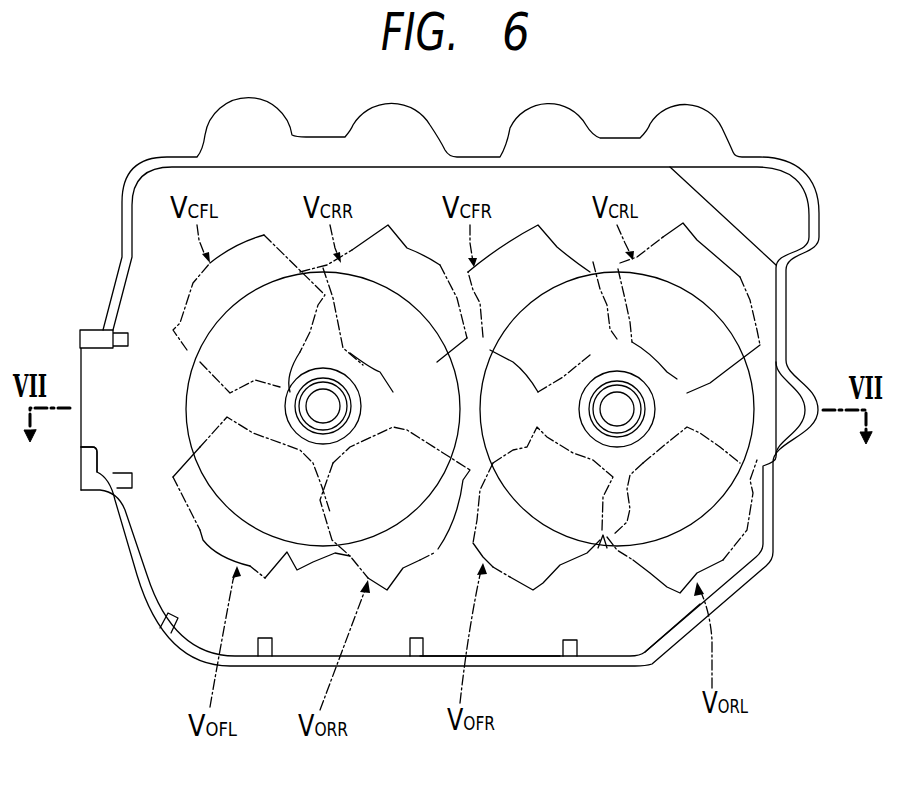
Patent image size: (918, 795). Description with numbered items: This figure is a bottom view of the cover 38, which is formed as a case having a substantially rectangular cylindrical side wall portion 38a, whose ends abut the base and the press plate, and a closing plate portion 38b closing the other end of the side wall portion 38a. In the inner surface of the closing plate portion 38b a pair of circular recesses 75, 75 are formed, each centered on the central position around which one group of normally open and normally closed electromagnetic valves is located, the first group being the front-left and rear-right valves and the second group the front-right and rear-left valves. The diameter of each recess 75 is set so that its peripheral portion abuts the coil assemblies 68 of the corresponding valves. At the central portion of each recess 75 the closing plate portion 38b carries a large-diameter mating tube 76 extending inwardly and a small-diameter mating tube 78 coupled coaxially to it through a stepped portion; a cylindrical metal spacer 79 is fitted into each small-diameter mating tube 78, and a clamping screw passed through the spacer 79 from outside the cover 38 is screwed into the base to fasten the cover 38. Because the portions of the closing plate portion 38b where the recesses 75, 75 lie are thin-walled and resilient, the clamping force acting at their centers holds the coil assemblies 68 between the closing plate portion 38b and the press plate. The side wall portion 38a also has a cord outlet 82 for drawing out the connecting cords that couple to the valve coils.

The cover 38 is at (394, 668).
The side wall portion 38a is at (537, 667).
The closing plate portion 38b is at (633, 640).
The coil assembly 68 is at (297, 570).
The recess 75 is at (188, 392).
The large-diameter mating tube 76 is at (360, 383).
The small-diameter mating tube 78 is at (361, 405).
The spacer 79 is at (305, 428).
The cord outlet 82 is at (81, 452).